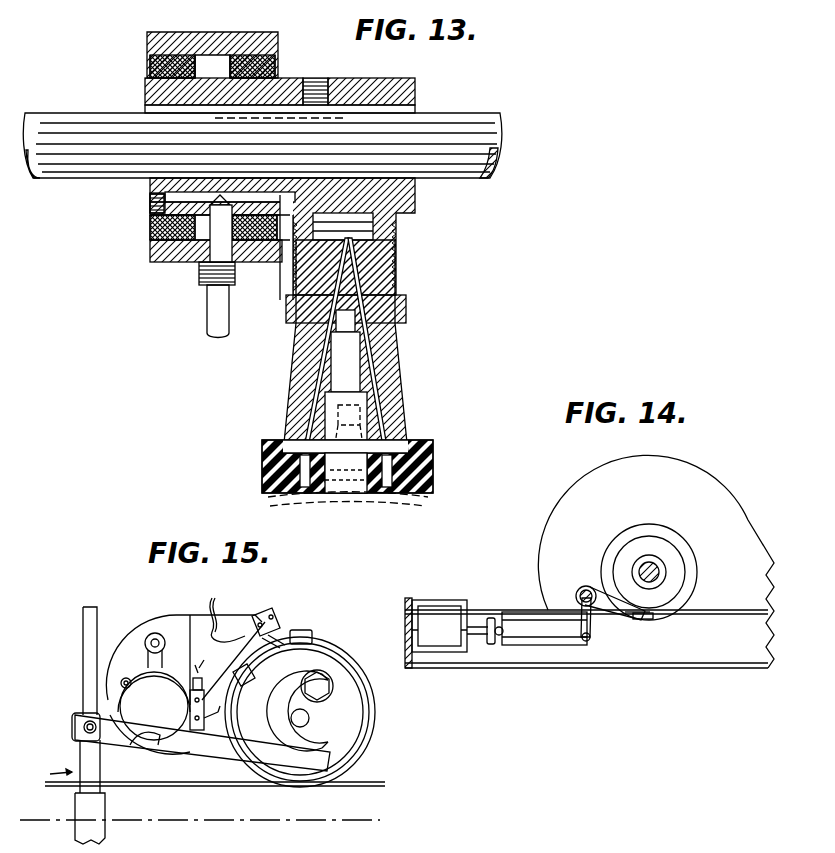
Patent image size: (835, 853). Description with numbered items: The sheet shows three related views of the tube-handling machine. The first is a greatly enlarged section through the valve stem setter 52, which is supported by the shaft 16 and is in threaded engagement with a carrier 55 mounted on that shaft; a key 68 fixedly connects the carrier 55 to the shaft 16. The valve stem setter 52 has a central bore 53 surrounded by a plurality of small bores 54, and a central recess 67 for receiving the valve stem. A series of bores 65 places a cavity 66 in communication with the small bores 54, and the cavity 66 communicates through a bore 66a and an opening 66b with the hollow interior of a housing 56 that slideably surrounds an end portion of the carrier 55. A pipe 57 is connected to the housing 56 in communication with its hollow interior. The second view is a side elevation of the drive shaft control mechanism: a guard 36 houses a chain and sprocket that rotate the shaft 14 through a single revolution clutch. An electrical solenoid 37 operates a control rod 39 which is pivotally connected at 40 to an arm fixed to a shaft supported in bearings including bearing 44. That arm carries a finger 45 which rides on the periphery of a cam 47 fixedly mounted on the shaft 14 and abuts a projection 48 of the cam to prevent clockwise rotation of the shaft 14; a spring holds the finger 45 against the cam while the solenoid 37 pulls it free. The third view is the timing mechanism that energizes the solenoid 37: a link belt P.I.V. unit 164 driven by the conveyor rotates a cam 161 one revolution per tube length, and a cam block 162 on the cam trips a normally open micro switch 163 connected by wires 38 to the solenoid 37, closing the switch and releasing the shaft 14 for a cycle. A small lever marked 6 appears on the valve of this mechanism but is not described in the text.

In FIG. 13, the shaft 16 is at (470, 113).
In FIG. 13, the housing 56 is at (190, 38).
In FIG. 13, the carrier 55 is at (413, 80).
In FIG. 13, the key 68 is at (340, 104).
In FIG. 13, the cavity 66 is at (365, 235).
In FIG. 13, the bore 66a is at (160, 203).
In FIG. 13, the opening 66b is at (165, 208).
In FIG. 13, the pipe 57 is at (220, 300).
In FIG. 13, the bores 65 is at (312, 383).
In FIG. 13, the central recess 67 is at (362, 428).
In FIG. 13, the valve stem setter 52 is at (436, 472).
In FIG. 13, the central bore 53 is at (345, 475).
In FIG. 13, the small bores 54 is at (367, 478).
In FIG. 14, the guard 36 is at (708, 497).
In FIG. 14, the cam 47 is at (678, 571).
In FIG. 14, the shaft 14 is at (644, 568).
In FIG. 14, the electrical solenoid 37 is at (443, 620).
In FIG. 14, the control rod 39 is at (556, 632).
In FIG. 14, the pivotal connection 40 is at (596, 641).
In FIG. 14, the bearing 44 is at (562, 604).
In FIG. 14, the finger 45 is at (642, 618).
In FIG. 14, the projection 48 is at (638, 617).
In FIG. 15, the link belt P.I.V. unit 164 is at (140, 662).
In FIG. 15, the valve 6 is at (205, 690).
In FIG. 15, the wires 38 is at (215, 612).
In FIG. 15, the micro switch 163 is at (276, 612).
In FIG. 15, the cam 161 is at (325, 675).
In FIG. 15, the cam block 162 is at (310, 640).